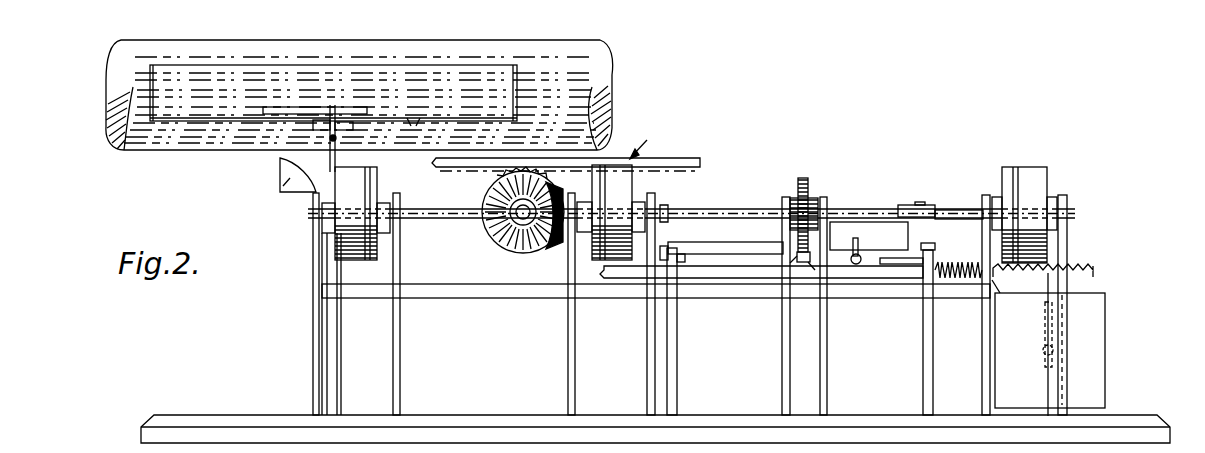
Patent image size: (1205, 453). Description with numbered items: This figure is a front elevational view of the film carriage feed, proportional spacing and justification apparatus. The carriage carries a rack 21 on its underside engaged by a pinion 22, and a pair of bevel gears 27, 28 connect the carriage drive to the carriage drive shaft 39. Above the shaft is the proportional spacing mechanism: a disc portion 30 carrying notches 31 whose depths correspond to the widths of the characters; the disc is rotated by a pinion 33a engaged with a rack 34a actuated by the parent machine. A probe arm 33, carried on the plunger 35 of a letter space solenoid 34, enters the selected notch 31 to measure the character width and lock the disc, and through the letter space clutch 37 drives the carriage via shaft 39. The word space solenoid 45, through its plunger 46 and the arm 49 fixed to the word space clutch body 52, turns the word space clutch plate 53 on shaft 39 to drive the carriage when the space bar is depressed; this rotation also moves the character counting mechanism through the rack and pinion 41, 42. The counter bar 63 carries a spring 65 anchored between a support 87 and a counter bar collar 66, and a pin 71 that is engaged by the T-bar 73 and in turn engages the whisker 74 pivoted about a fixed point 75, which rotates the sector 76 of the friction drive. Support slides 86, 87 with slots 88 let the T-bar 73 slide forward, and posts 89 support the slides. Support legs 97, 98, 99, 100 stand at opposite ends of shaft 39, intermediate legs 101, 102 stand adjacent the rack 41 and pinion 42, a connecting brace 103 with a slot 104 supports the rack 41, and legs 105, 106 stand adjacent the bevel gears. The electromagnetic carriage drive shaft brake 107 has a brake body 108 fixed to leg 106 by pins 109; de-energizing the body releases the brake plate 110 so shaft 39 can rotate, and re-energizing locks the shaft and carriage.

The rack 21 is at (510, 167).
The pinion 22 is at (500, 175).
The bevel gear 27 is at (490, 200).
The bevel gear 28 is at (553, 245).
The disc portion 30 is at (297, 118).
The notches 31 is at (413, 126).
The probe arm 33 is at (326, 130).
The pinion 33a is at (318, 106).
The letter space solenoid 34 is at (280, 183).
The rack 34a is at (370, 108).
The plunger 35 is at (403, 125).
The letter space clutch 37 is at (379, 176).
The carriage drive shaft 39 is at (737, 212).
The rack 41 is at (797, 254).
The pinion 42 is at (807, 180).
The word space solenoid 45 is at (1035, 393).
The word space solenoid plunger 46 is at (1039, 167).
The arm 49 is at (1035, 323).
The word space clutch body 52 is at (1047, 172).
The word space clutch plate 53 is at (1003, 172).
The counter bar 63 is at (958, 262).
The spring 65 is at (947, 282).
The counter bar collar 66 is at (998, 285).
The pin 71 is at (865, 250).
The T-bar 73 is at (727, 254).
The whisker 74 is at (853, 246).
The fixed point 75 is at (922, 204).
The sector 76 is at (958, 218).
The support slide 86 is at (660, 250).
The support 87 is at (935, 246).
The slot 88 is at (685, 254).
The posts 89 is at (677, 363).
The support leg 97 is at (313, 357).
The support leg 98 is at (400, 349).
The support leg 99 is at (982, 362).
The support leg 100 is at (1065, 289).
The intermediate support leg 101 is at (782, 362).
The intermediate support leg 102 is at (827, 358).
The connecting brace 103 is at (795, 265).
The slot 104 is at (810, 268).
The support leg 105 is at (568, 351).
The support leg 106 is at (647, 363).
The carriage drive shaft brake 107 is at (653, 142).
The brake body 108 is at (623, 182).
The pins 109 is at (667, 212).
The brake plate 110 is at (587, 261).